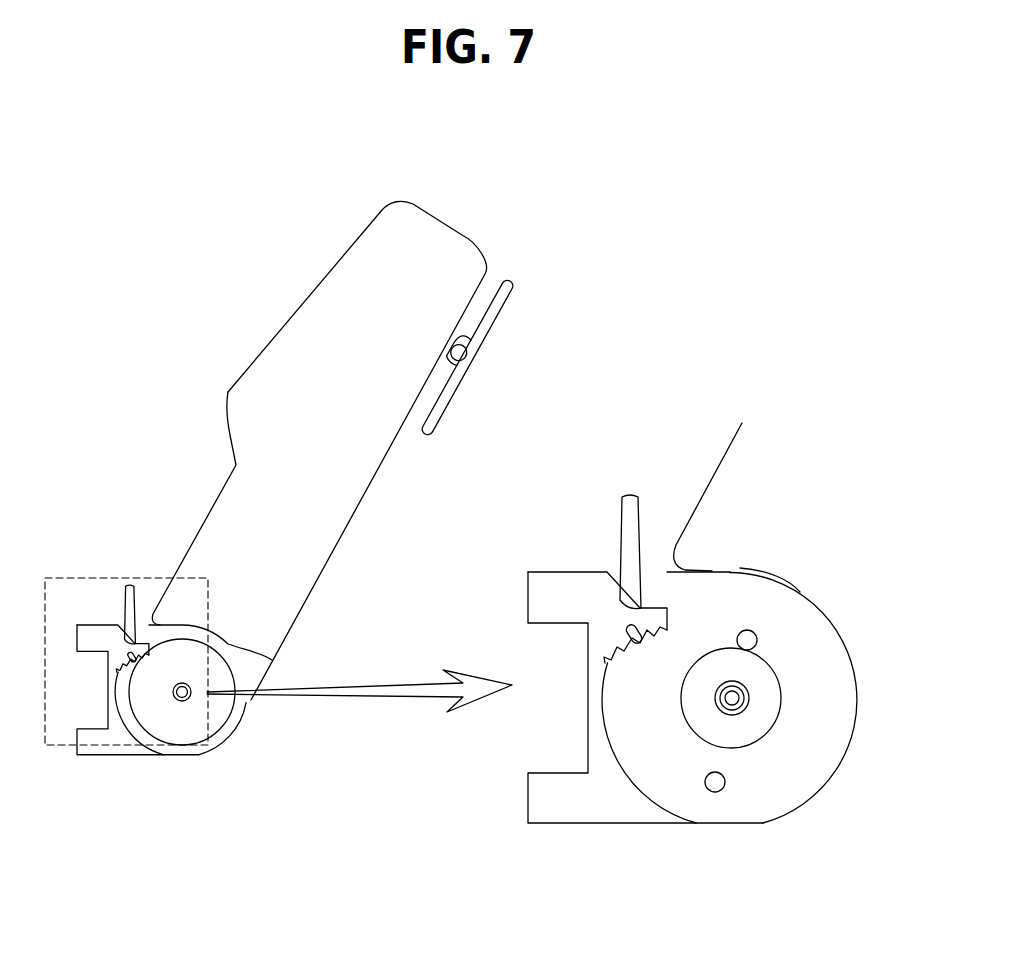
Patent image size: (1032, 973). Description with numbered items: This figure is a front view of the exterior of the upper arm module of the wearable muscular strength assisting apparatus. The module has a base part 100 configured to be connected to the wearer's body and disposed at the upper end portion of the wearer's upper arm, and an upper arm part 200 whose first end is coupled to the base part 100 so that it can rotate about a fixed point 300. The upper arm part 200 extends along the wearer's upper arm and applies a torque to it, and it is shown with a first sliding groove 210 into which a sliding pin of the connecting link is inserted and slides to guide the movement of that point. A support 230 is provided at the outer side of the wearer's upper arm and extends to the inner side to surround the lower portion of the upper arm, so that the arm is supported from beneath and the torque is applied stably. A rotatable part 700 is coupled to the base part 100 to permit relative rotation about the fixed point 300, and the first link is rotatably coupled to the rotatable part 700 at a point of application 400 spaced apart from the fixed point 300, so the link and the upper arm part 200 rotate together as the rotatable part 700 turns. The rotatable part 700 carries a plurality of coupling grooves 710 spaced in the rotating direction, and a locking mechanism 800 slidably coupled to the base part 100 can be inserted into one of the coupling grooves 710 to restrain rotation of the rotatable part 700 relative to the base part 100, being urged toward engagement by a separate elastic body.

The base part 100 is at (538, 797).
The upper arm part 200 is at (300, 297).
The first sliding groove 210 is at (718, 493).
The support 230 is at (500, 317).
The fixed point 300 is at (736, 704).
The point of application 400 is at (755, 632).
The rotatable part 700 is at (673, 783).
The coupling grooves 710 is at (610, 650).
The locking mechanism 800 is at (628, 527).